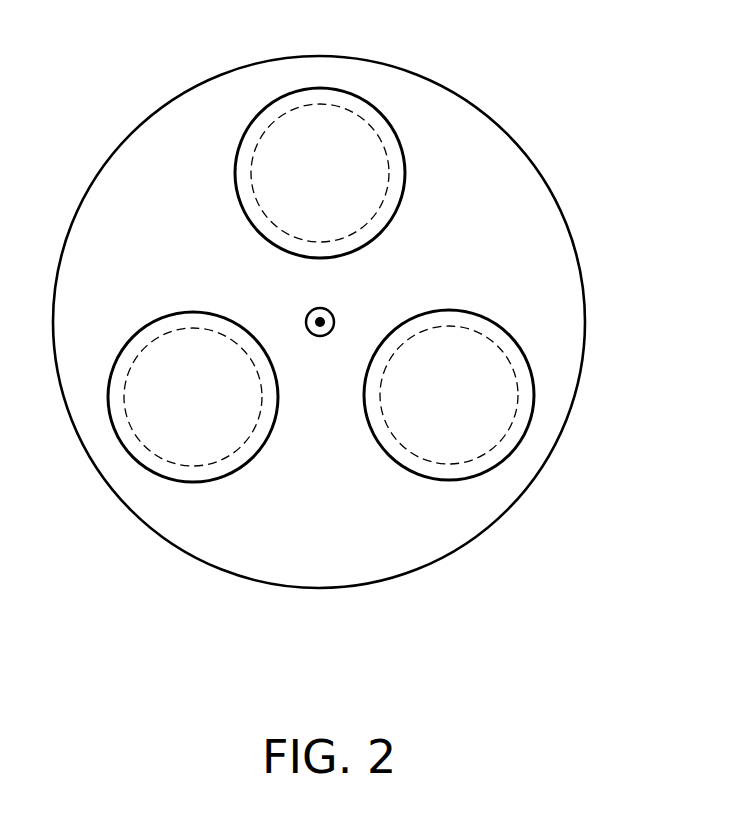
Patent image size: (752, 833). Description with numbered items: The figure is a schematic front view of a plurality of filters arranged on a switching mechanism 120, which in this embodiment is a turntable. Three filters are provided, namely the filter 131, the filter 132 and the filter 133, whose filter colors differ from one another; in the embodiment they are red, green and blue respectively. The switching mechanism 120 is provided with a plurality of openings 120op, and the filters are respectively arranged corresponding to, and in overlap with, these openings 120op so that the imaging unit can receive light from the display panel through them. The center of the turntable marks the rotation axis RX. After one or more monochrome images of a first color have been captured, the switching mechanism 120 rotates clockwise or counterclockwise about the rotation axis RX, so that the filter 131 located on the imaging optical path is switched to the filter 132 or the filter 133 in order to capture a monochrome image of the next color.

The switching mechanism 120 is at (178, 137).
The openings 120op is at (377, 137).
The filter 131 is at (258, 112).
The filter 132 is at (520, 445).
The filter 133 is at (120, 445).
The rotation axis RX is at (328, 304).